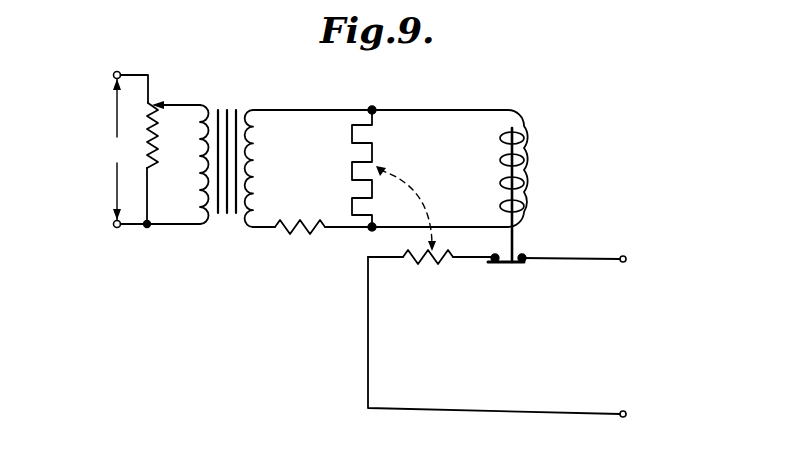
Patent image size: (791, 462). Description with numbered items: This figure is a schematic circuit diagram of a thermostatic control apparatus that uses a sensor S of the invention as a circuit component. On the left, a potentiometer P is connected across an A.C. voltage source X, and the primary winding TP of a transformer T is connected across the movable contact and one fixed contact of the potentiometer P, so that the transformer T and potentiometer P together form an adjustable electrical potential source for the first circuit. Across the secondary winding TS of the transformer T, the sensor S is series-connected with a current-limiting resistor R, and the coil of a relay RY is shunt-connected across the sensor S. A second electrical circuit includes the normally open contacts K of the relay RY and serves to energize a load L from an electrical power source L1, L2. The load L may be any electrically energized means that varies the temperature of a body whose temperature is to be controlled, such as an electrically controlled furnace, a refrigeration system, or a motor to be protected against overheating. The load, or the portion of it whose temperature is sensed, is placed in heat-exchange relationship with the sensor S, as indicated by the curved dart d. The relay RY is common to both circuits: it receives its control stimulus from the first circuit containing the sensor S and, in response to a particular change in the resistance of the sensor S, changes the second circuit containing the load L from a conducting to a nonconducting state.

The A.C. voltage source X is at (116, 149).
The potentiometer P is at (155, 133).
The primary winding TP is at (198, 180).
The transformer T is at (226, 226).
The secondary winding TS is at (256, 152).
The sensor S is at (351, 169).
The current-limiting resistor R is at (318, 232).
The relay RY is at (486, 165).
The curved dart d is at (406, 208).
The load L is at (442, 265).
The normally open contacts K is at (525, 266).
The electrical power source terminal L1 is at (593, 261).
The electrical power source terminal L2 is at (516, 343).